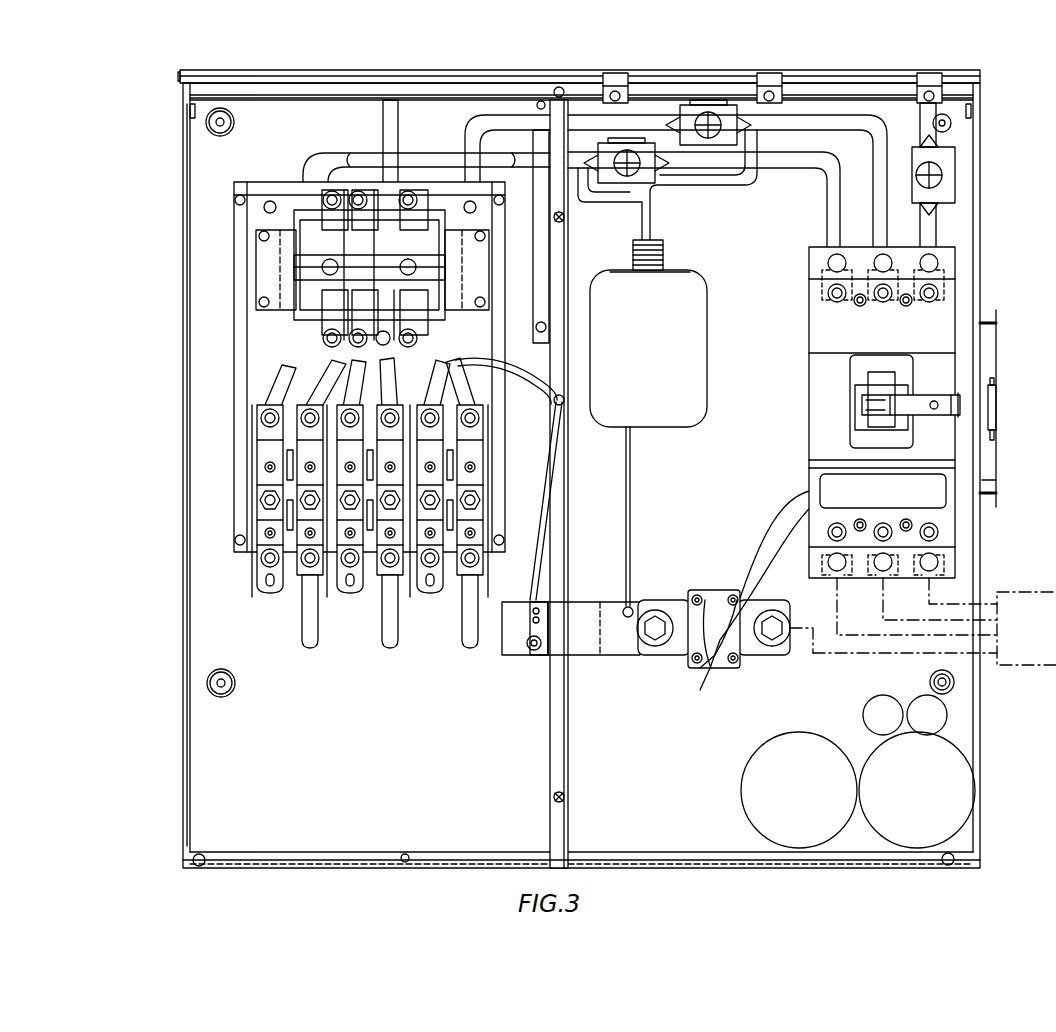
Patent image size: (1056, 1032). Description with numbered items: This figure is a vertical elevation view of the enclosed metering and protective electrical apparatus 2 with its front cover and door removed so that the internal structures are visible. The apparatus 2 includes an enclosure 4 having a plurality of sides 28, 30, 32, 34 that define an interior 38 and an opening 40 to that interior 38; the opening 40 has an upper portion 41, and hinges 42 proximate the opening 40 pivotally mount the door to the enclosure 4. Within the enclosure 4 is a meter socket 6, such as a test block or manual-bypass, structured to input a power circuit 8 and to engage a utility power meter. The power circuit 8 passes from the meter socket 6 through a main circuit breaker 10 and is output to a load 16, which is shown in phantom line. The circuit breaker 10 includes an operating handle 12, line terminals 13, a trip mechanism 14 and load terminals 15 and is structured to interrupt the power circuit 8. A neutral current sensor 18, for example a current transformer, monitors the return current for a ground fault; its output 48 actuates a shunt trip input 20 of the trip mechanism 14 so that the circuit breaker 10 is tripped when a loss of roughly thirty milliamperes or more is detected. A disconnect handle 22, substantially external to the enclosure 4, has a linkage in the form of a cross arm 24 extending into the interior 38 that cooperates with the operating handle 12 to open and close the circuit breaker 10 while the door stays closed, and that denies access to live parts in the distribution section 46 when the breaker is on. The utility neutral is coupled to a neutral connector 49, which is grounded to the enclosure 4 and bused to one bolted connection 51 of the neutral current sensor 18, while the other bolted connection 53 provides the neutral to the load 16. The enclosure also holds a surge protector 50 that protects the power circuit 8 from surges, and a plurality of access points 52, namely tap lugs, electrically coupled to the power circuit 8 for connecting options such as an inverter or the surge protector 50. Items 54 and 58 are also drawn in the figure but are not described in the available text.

The enclosed metering and protective electrical apparatus 2 is at (147, 812).
The enclosure 4 is at (178, 184).
The meter socket 6 is at (217, 351).
The power circuit 8 is at (488, 658).
The main circuit breaker 10 is at (805, 313).
The operating handle 12 is at (862, 405).
The line terminals 13 is at (832, 256).
The trip mechanism 14 is at (832, 486).
The load terminals 15 is at (925, 572).
The load 16 is at (1043, 592).
The neutral current sensor 18 is at (706, 590).
The shunt trip input 20 is at (810, 502).
The disconnect handle 22 is at (1001, 354).
The cross arm 24 is at (936, 392).
The side 28 is at (190, 540).
The side 30 is at (584, 74).
The side 32 is at (976, 790).
The side 34 is at (712, 868).
The interior 38 is at (598, 738).
The opening 40 is at (566, 765).
The upper portion 41 is at (900, 96).
The hinges 42 is at (618, 83).
The distribution section 46 is at (598, 696).
The output 48 is at (700, 668).
The neutral connector 49 is at (530, 652).
The surge protector 50 is at (710, 344).
The bolted connection 51 is at (658, 648).
The access points 52 is at (708, 122).
The bolted connection 53 is at (777, 648).
The door handle 54 is at (998, 398).
The door latch 58 is at (997, 480).